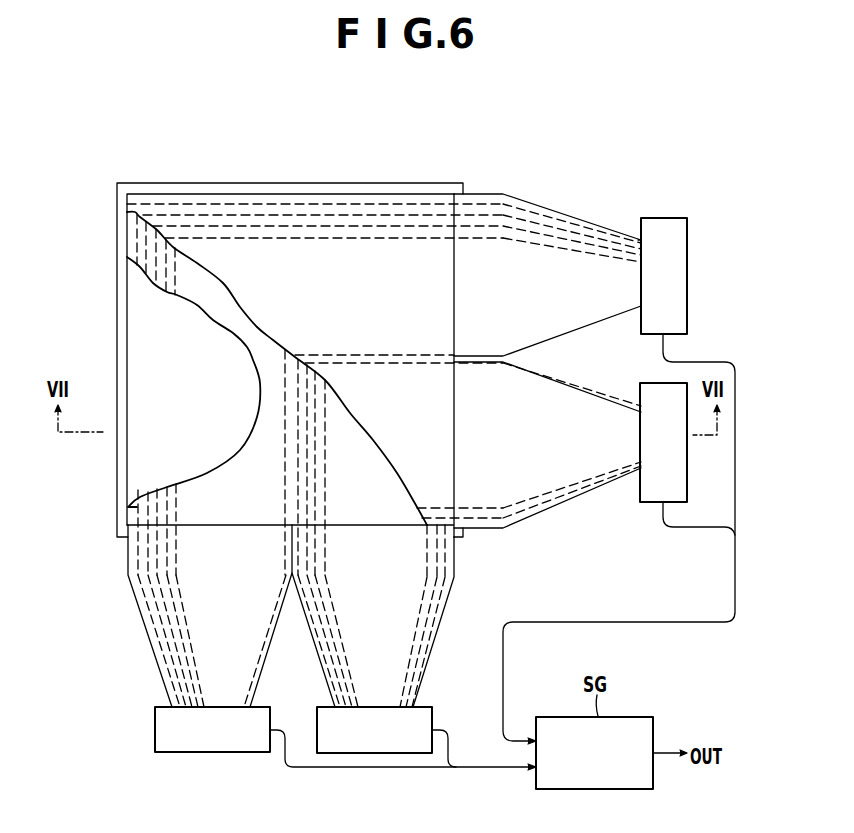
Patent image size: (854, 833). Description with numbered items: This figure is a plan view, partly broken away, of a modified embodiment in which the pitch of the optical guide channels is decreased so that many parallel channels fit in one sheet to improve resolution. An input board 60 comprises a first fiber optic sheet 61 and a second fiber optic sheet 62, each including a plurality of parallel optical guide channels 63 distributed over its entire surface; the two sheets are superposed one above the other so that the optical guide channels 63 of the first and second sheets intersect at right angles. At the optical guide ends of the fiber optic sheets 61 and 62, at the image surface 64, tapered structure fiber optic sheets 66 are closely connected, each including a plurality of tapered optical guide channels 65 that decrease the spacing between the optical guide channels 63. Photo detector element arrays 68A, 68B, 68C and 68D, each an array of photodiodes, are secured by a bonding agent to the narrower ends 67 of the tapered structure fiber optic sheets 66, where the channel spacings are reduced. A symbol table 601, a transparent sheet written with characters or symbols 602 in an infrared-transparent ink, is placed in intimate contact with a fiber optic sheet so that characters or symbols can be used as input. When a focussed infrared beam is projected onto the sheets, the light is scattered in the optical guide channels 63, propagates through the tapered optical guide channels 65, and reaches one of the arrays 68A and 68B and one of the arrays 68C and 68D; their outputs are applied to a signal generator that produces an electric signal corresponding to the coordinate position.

The input board 60 is at (113, 268).
The symbol table 601 is at (117, 228).
The characters or symbols 602 is at (118, 340).
The first fiber optic sheet 61 is at (388, 301).
The second fiber optic sheet 62 is at (253, 498).
The optical guide channels 63 is at (395, 203).
The image surface 64 is at (455, 225).
The tapered optical guide channels 65 is at (600, 230).
The tapered structure fiber optic sheets 66 is at (549, 300).
The narrower ends 67 is at (639, 240).
The photo detector element array 68A is at (688, 268).
The photo detector element array 68B is at (688, 472).
The photo detector element array 68C is at (210, 753).
The photo detector element array 68D is at (428, 707).